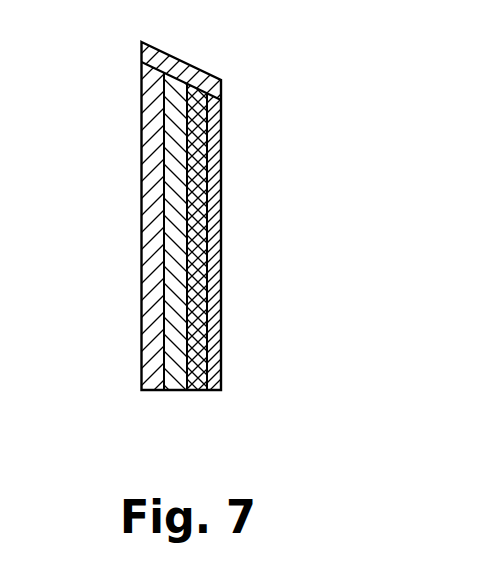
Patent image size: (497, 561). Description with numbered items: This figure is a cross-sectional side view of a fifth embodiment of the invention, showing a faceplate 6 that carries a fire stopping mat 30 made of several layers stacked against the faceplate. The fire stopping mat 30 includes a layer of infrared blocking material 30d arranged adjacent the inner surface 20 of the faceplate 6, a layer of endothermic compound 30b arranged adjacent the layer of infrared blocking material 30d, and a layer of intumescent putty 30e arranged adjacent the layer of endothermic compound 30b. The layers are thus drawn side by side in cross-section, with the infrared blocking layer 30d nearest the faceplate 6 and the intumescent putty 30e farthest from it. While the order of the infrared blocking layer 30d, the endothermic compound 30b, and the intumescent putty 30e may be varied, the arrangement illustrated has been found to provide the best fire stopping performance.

The faceplate 6 is at (183, 68).
The inner surface 20 is at (196, 126).
The fire stopping mat 30 is at (221, 397).
The layer of endothermic compound 30b is at (176, 256).
The layer of infrared blocking material 30d is at (195, 192).
The layer of intumescent putty 30e is at (150, 276).